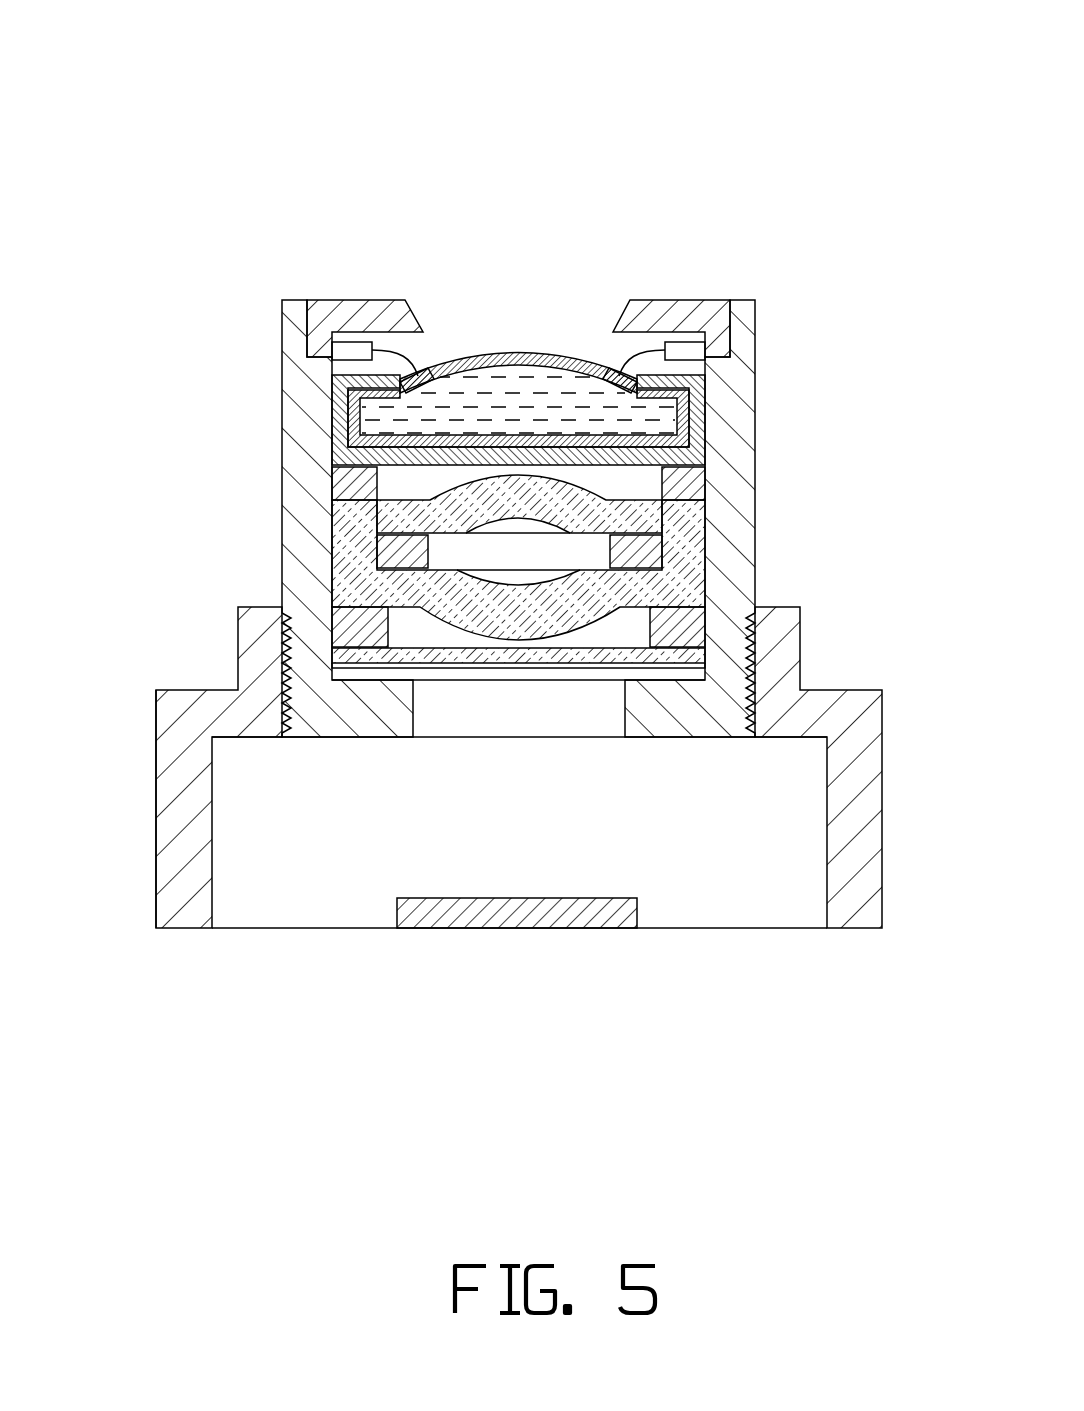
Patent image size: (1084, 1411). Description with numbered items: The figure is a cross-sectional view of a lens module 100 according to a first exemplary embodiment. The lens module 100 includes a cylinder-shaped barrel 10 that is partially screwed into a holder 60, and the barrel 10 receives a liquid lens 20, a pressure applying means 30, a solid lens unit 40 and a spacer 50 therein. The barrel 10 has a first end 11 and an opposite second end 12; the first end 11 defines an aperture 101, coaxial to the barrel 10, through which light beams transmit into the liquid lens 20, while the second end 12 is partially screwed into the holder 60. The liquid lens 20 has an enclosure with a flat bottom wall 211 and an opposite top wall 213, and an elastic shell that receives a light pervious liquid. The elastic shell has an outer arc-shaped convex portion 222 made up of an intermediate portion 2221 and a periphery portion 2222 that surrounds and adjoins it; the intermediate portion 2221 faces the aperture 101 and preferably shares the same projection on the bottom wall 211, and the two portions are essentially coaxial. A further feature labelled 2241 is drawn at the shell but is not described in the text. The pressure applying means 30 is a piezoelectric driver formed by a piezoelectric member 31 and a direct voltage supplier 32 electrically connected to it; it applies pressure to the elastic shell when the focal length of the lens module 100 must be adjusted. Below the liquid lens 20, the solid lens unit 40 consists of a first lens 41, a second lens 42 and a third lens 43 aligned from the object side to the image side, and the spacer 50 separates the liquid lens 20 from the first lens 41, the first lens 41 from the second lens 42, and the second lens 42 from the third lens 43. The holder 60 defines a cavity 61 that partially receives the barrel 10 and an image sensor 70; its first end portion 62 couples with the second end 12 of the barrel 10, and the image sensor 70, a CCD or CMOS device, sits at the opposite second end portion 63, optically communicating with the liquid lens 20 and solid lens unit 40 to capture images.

The lens module 100 is at (557, 25).
The barrel 10 is at (743, 347).
The first end 11 is at (746, 312).
The aperture 101 is at (597, 320).
The second end 12 is at (358, 712).
The liquid lens 20 is at (526, 300).
The bottom wall 211 is at (625, 455).
The top wall 213 is at (332, 380).
The outer arc-shaped convex portion 222 is at (532, 285).
The intermediate portion 2221 is at (445, 392).
The periphery portion 2222 is at (555, 356).
The membrane coating 2241 is at (480, 337).
The pressure applying means 30 is at (457, 216).
The piezoelectric member 31 is at (428, 372).
The direct voltage supplier 32 is at (353, 352).
The solid lens unit 40 is at (573, 567).
The first lens 41 is at (577, 500).
The second lens 42 is at (577, 612).
The third lens 43 is at (610, 644).
The spacer 50 is at (373, 637).
The holder 60 is at (468, 827).
The cavity 61 is at (741, 855).
The first end portion 62 is at (260, 648).
The second end portion 63 is at (183, 803).
The image sensor 70 is at (524, 915).